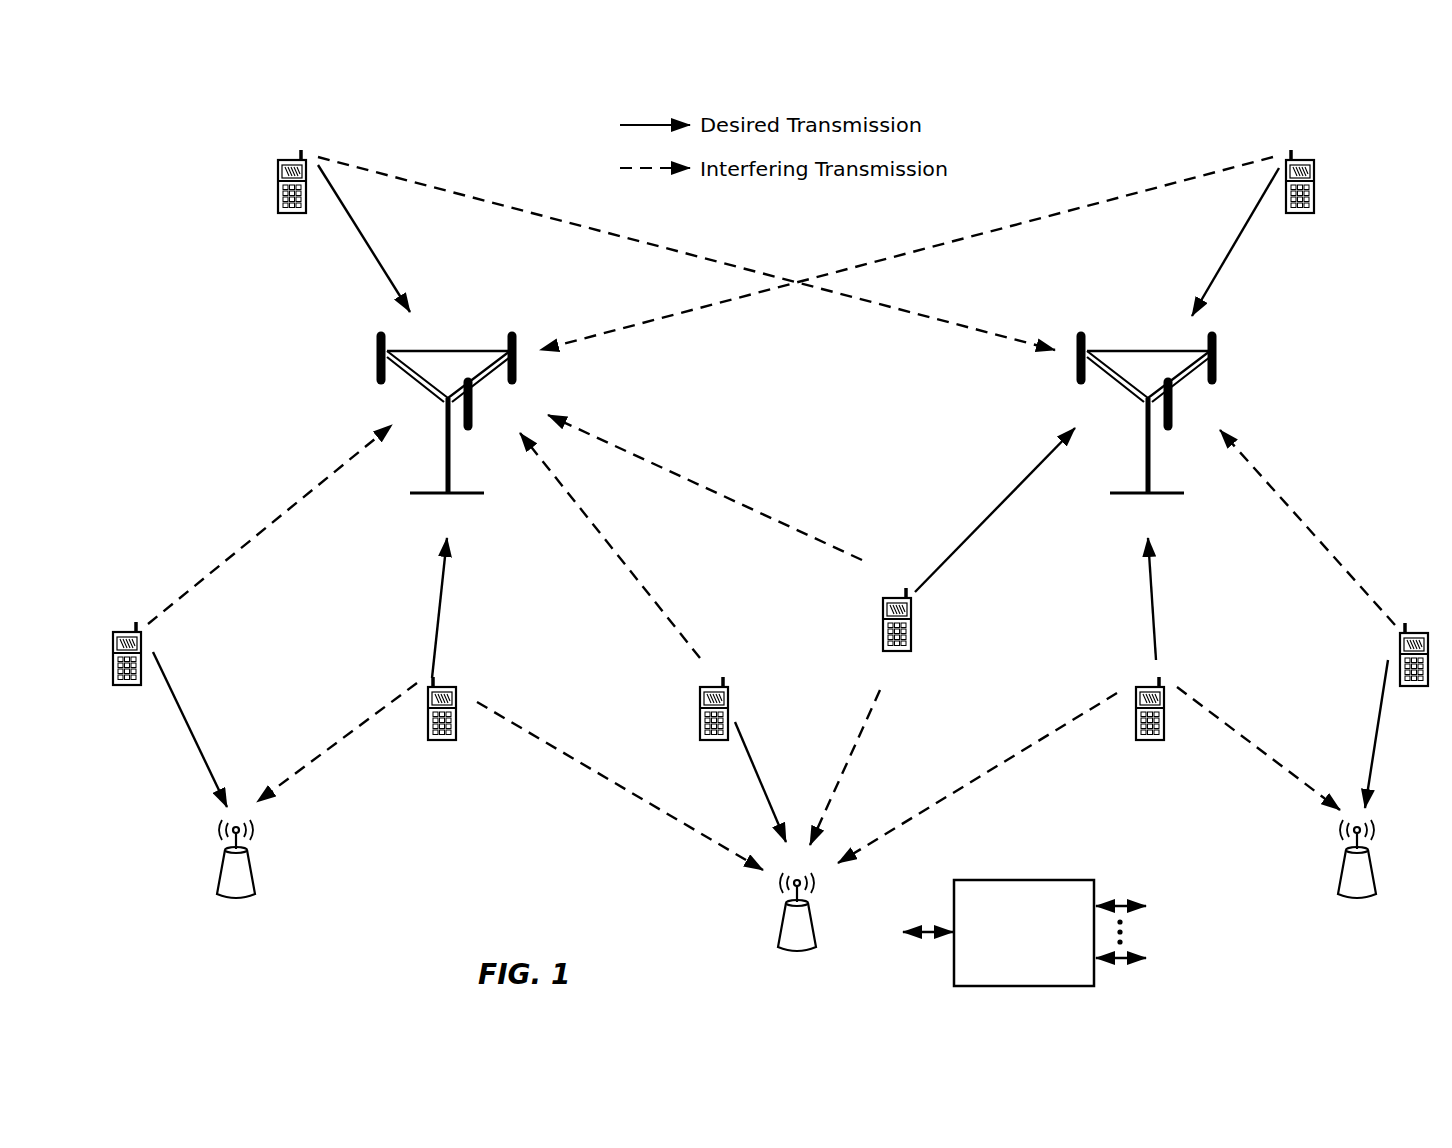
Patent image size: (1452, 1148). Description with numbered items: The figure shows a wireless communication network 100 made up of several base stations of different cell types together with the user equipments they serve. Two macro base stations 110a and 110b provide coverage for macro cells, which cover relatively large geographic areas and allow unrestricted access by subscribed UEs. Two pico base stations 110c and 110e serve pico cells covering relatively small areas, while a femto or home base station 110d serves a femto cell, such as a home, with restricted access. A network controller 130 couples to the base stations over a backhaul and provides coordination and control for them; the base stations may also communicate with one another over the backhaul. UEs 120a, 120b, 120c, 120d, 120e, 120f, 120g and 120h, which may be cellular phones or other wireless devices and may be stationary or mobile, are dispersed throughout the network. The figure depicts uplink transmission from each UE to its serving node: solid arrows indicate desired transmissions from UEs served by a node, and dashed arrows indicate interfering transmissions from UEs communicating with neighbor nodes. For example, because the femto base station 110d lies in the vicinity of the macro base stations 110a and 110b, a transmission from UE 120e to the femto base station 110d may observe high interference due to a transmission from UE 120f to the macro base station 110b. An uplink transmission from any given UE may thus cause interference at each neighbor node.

The wireless communication network 100 is at (152, 149).
The macro base station 110a is at (440, 350).
The macro base station 110b is at (1140, 350).
The pico base station 110c is at (222, 871).
The femto/home base station 110d is at (782, 923).
The pico base station 110e is at (1342, 871).
The UE 120a is at (279, 167).
The UE 120b is at (1326, 153).
The UE 120c is at (113, 641).
The UE 120d is at (470, 683).
The UE 120e is at (700, 695).
The UE 120f is at (883, 606).
The UE 120g is at (1136, 695).
The UE 120h is at (1438, 630).
The network controller 130 is at (1020, 880).